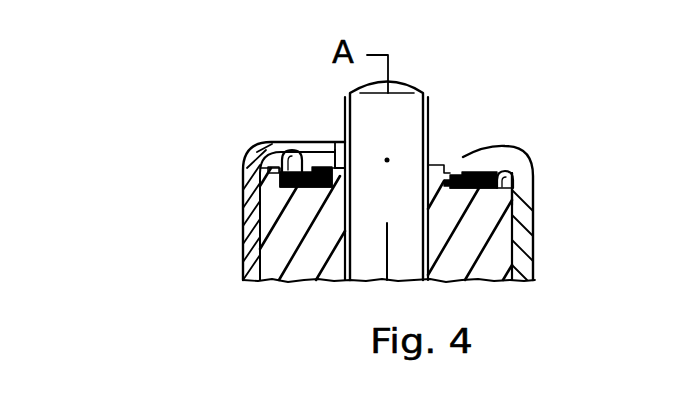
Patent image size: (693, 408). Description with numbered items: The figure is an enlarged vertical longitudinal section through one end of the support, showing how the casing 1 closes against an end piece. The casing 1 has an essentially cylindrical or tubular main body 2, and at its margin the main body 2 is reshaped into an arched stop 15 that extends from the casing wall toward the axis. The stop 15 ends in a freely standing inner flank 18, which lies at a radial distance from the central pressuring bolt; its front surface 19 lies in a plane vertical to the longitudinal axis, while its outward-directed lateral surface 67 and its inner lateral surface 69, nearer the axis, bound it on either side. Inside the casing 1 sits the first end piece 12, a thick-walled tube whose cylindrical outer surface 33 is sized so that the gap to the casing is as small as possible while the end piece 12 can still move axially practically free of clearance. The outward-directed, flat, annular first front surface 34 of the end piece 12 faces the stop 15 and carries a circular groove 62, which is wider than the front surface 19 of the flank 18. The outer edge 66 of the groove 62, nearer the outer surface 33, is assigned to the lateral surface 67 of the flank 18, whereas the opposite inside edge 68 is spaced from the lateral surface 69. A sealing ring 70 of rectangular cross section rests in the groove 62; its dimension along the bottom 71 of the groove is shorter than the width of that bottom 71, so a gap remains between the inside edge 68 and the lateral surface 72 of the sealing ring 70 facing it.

The casing 1 is at (242, 265).
The main body of the casing 2 is at (535, 277).
The first end piece 12 is at (295, 283).
The stop 15 is at (249, 150).
The inner flank of the stop 18 is at (288, 151).
The front surface of the stop flank 19 is at (278, 170).
The outer surface of the end piece 33 is at (290, 212).
The first front surface of the end piece 34 is at (335, 165).
The circular groove 62 is at (514, 238).
The outer edge of the circular groove 66 is at (468, 188).
The outer lateral surface of the stop flank 67 is at (515, 181).
The inside edge of the circular groove 68 is at (440, 165).
The inner lateral surface of the stop flank 69 is at (496, 153).
The sealing ring 70 is at (316, 167).
The bottom of the groove 71 is at (463, 197).
The lateral surface of the sealing ring 72 is at (462, 165).